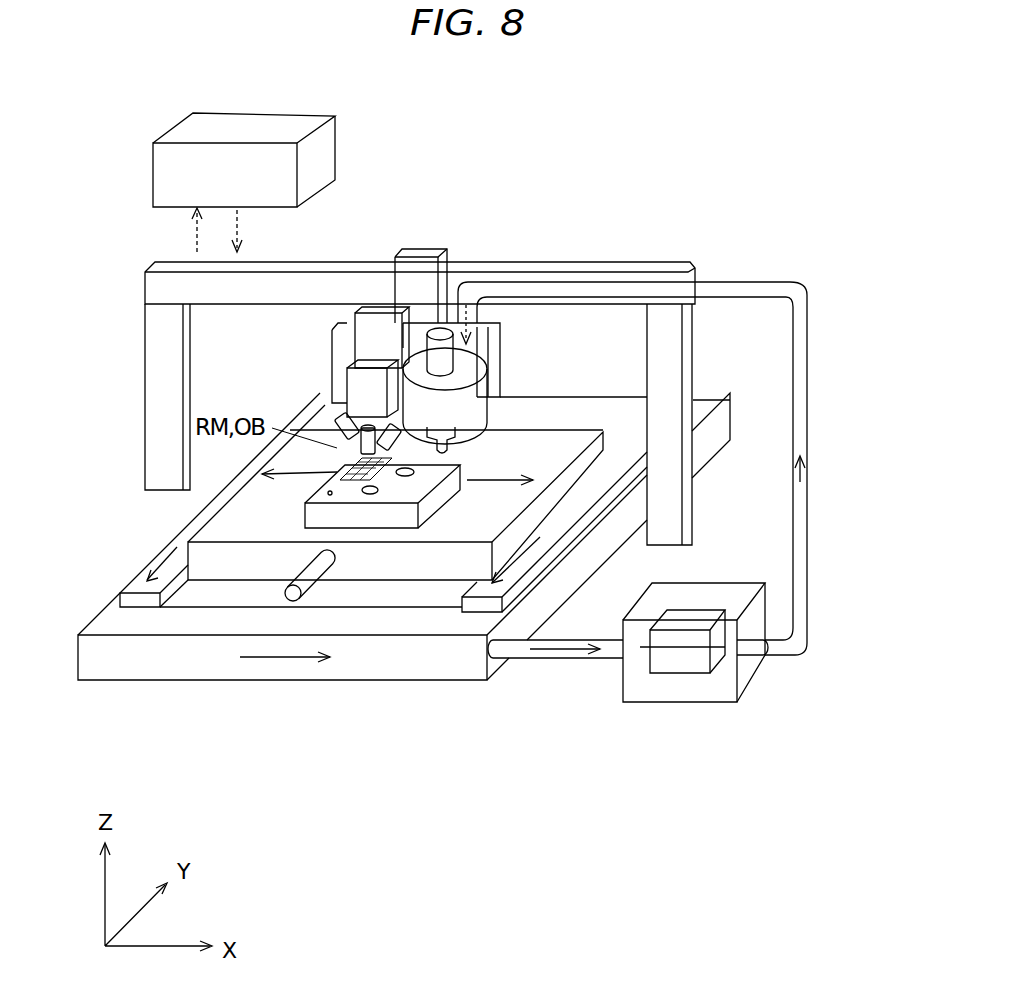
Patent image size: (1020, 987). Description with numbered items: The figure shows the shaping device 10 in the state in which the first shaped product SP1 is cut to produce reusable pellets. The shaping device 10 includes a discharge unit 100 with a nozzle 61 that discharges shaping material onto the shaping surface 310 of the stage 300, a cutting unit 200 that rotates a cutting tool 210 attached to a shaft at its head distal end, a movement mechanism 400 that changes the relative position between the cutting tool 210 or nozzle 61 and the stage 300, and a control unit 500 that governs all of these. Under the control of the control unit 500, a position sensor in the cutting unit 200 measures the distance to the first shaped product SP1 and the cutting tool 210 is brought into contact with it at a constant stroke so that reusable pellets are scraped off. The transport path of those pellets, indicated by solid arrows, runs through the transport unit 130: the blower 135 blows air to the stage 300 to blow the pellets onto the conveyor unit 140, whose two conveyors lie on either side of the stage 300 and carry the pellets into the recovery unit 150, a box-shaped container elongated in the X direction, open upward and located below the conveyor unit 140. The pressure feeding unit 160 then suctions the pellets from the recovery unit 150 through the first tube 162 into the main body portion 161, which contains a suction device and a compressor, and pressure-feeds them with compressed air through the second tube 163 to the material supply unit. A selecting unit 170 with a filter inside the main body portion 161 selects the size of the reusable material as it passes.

The shaping device 10 is at (150, 98).
The control unit 500 is at (165, 207).
The cutting unit 200 is at (343, 322).
The blower 135 is at (345, 425).
The cutting tool 210 is at (340, 430).
The discharge unit 100 is at (470, 393).
The nozzle 61 is at (480, 432).
The movement mechanism 400 is at (632, 262).
The transport unit 130 is at (773, 272).
The second tube 163 is at (783, 657).
The stage 300 is at (570, 412).
The shaping surface 310 is at (527, 447).
The first shaped product SP1 is at (312, 500).
The conveyor unit 140 is at (158, 563).
The recovery unit 150 is at (130, 660).
The first tube 162 is at (560, 660).
The pressure feeding unit 160 is at (752, 742).
The main body portion 161 is at (645, 690).
The selecting unit 170 is at (697, 612).